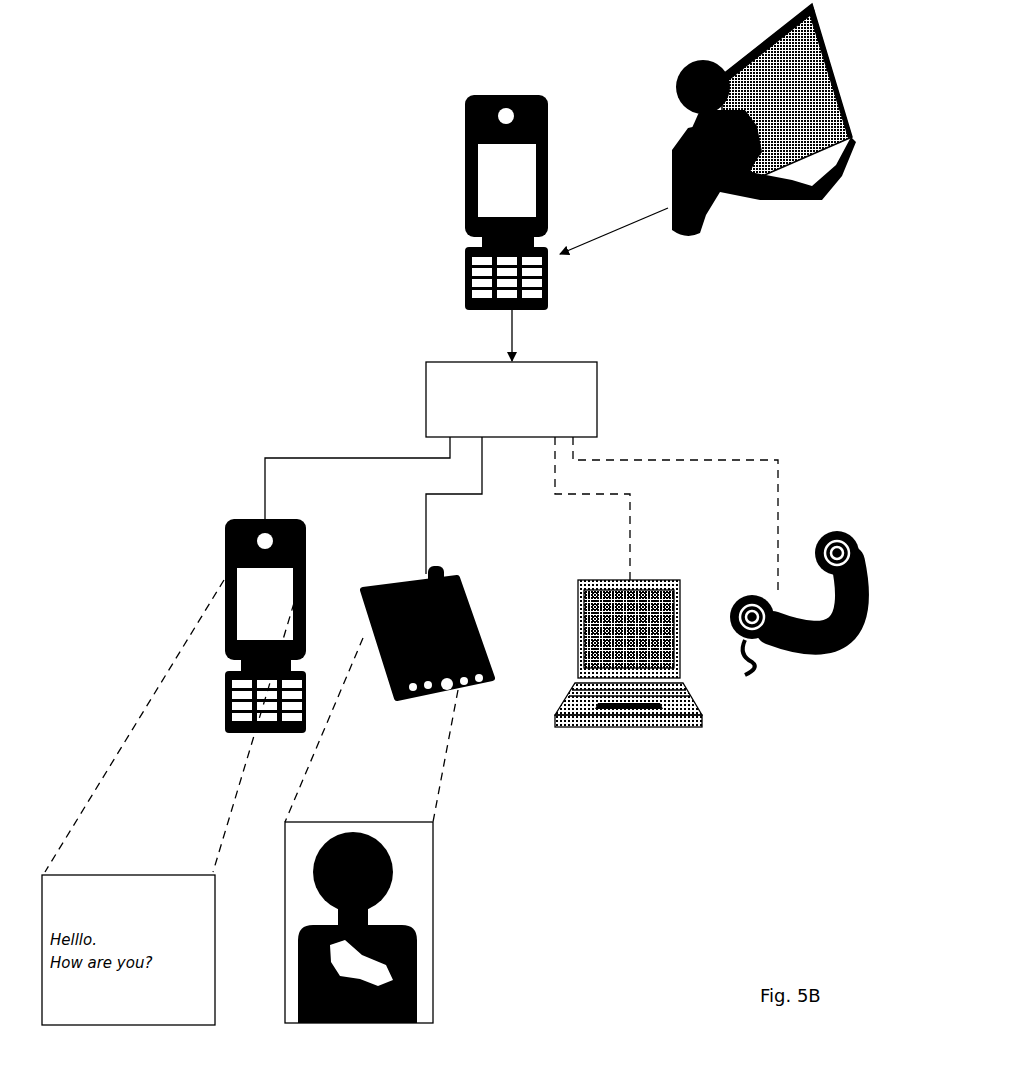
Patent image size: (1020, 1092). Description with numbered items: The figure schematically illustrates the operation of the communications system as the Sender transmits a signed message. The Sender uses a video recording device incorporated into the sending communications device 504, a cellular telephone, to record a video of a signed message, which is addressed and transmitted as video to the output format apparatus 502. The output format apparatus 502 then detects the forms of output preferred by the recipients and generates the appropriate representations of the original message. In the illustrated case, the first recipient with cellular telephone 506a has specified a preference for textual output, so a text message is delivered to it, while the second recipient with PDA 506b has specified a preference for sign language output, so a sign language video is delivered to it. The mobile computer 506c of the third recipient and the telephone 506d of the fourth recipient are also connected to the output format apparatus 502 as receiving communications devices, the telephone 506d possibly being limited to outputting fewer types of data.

The sending communications device 504 is at (463, 248).
The output format apparatus 502 is at (426, 400).
The cellular telephone 506a is at (225, 530).
The PDA 506b is at (372, 590).
The mobile computer 506c is at (578, 598).
The telephone 506d is at (728, 605).